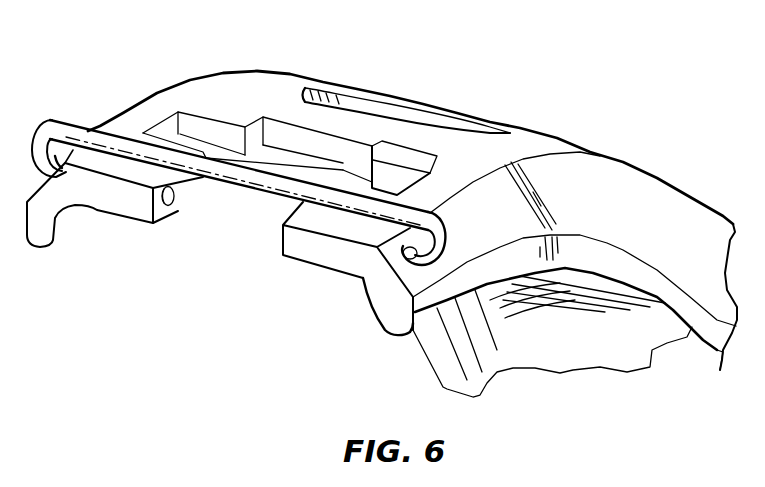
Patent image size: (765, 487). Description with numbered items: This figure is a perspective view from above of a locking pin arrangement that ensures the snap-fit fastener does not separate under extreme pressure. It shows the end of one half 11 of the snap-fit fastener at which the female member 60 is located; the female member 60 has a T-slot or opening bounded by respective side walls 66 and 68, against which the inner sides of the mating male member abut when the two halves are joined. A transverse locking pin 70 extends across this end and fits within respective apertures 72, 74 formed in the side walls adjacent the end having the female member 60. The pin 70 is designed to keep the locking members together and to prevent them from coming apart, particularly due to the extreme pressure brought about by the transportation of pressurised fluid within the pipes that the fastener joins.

The half of the snap-fit fastener 11 is at (557, 137).
The female member 60 is at (236, 208).
The side wall 66 is at (347, 183).
The side wall 68 is at (176, 133).
The transverse locking pin 70 is at (84, 130).
The aperture 72 is at (173, 201).
The aperture 74 is at (387, 258).